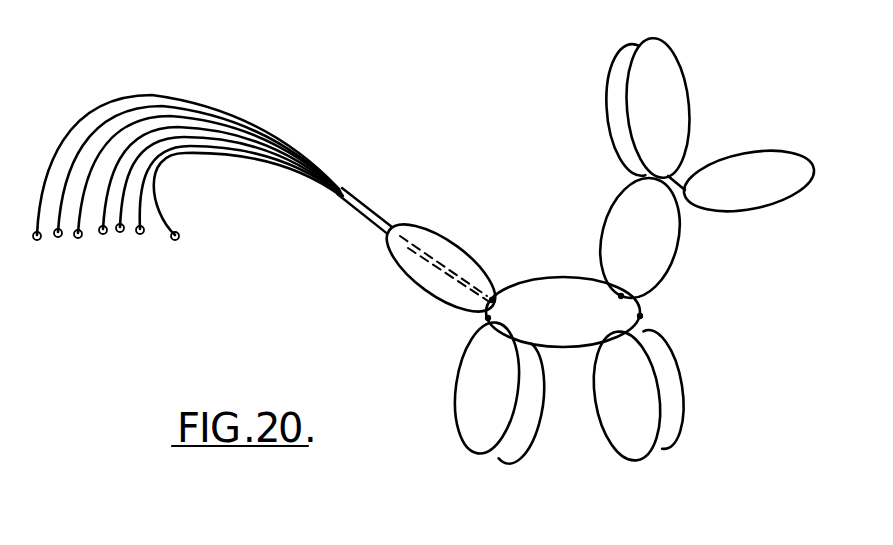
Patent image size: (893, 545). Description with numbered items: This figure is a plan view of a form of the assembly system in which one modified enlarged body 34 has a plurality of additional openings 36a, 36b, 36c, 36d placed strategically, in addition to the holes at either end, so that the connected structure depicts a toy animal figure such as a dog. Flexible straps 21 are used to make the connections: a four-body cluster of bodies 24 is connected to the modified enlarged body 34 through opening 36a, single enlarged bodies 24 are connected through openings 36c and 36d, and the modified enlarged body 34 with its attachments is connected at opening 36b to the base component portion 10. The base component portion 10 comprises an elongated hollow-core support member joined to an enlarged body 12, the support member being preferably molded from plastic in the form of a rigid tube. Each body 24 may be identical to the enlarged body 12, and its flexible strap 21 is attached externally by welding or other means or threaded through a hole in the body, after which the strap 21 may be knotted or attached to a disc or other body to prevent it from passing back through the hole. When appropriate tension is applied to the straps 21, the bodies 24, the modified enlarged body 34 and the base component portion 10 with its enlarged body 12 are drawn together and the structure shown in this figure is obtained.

The base component portion 10 is at (378, 201).
The enlarged body 12 is at (440, 230).
The flexible strap 21 is at (187, 167).
The body 24 is at (607, 75).
The modified enlarged body 34 is at (547, 287).
The opening 36a is at (607, 285).
The opening 36b is at (491, 298).
The opening 36c is at (640, 315).
The opening 36d is at (480, 320).